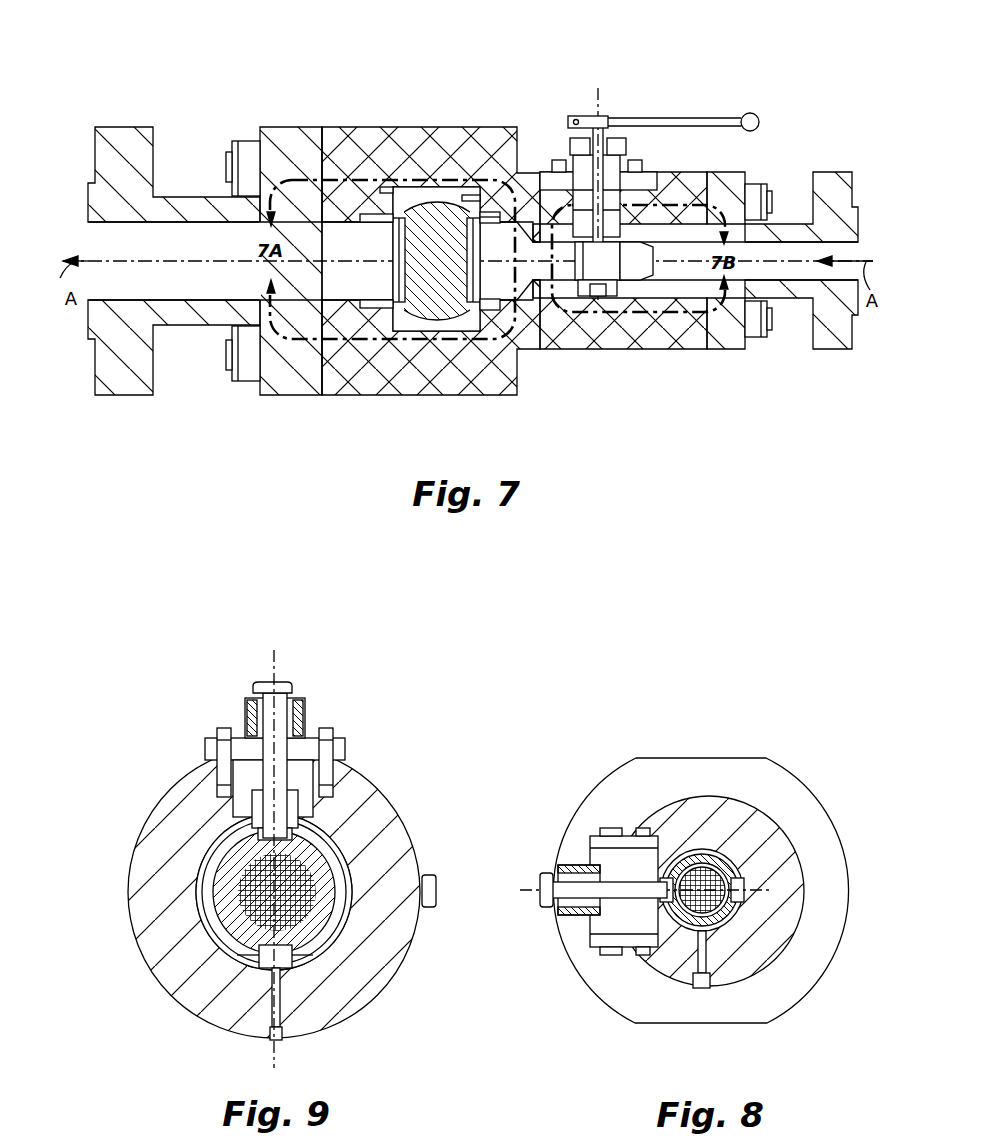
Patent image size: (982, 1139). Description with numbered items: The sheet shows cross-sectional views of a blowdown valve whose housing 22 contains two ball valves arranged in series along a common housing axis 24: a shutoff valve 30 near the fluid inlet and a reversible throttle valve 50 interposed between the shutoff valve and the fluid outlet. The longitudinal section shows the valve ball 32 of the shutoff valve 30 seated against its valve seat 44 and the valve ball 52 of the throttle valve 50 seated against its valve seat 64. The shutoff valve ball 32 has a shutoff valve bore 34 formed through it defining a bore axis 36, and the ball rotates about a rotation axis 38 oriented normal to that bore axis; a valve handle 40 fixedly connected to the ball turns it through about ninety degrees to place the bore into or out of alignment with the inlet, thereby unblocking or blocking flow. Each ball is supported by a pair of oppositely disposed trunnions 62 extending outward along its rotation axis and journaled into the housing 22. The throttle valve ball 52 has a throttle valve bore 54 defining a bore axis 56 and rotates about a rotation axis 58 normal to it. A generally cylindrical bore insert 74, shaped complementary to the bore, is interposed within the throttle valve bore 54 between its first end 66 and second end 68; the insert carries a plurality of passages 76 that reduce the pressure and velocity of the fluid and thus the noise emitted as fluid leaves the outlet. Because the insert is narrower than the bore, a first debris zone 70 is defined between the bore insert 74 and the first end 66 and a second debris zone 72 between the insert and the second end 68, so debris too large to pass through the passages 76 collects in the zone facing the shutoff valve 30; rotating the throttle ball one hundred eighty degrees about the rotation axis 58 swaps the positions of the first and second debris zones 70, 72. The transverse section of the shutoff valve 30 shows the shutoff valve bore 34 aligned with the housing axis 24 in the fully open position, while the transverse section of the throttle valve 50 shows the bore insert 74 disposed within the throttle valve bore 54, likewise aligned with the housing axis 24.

In FIG. 9, the housing 22 is at (390, 957).
In FIG. 8, the housing 22 is at (795, 993).
In FIG. 7, the housing axis 24 is at (100, 262).
In FIG. 7, the shutoff valve 30 is at (643, 231).
In FIG. 8, the shutoff valve 30 is at (605, 893).
In FIG. 7, the valve ball 32 is at (597, 294).
In FIG. 7, the shutoff valve bore 34 is at (608, 272).
In FIG. 8, the shutoff valve bore 34 is at (637, 962).
In FIG. 7, the bore axis 36 is at (645, 283).
In FIG. 7, the rotation axis 38 is at (597, 87).
In FIG. 8, the rotation axis 38 is at (522, 890).
In FIG. 7, the valve handle 40 is at (727, 117).
In FIG. 7, the valve seat 44 is at (652, 195).
In FIG. 7, the throttle valve 50 is at (404, 227).
In FIG. 9, the throttle valve 50 is at (275, 762).
In FIG. 7, the valve ball 52 is at (428, 312).
In FIG. 9, the throttle valve bore 54 is at (334, 857).
In FIG. 7, the bore axis 56 is at (475, 245).
In FIG. 9, the rotation axis 58 is at (276, 662).
In FIG. 9, the trunnions 62 is at (300, 820).
In FIG. 7, the valve seat 64 is at (495, 258).
In FIG. 7, the first end 66 is at (515, 252).
In FIG. 7, the second end 68 is at (365, 216).
In FIG. 7, the first debris zone 70 is at (477, 200).
In FIG. 7, the second debris zone 72 is at (382, 185).
In FIG. 9, the bore insert 74 is at (313, 940).
In FIG. 9, the passages 76 is at (276, 936).